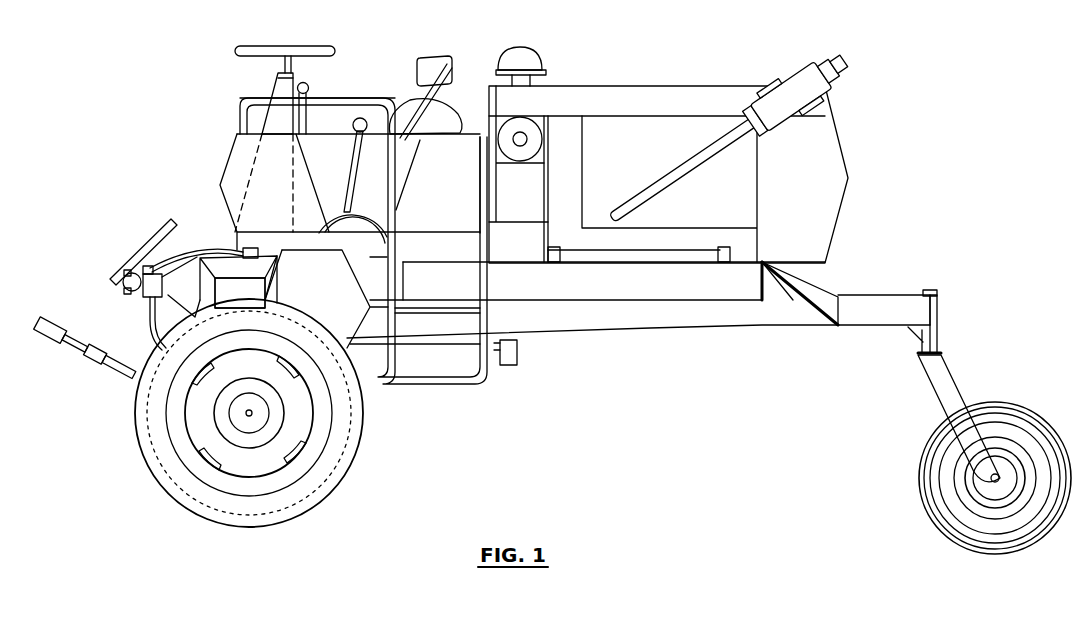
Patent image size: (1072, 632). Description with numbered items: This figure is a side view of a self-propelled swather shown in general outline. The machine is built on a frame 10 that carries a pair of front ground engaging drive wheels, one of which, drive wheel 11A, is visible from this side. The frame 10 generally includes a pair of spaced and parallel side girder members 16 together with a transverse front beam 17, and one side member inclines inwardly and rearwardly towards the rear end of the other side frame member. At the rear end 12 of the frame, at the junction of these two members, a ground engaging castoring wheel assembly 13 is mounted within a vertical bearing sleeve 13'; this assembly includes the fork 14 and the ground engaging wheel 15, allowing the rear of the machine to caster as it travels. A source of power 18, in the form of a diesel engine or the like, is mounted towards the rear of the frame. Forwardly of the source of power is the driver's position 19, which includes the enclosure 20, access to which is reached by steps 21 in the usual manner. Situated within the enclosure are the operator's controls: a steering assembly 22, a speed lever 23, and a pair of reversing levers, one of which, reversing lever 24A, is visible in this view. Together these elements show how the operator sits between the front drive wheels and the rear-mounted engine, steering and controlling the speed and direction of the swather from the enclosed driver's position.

The frame 10 is at (645, 331).
The front ground engaging drive wheel 11A is at (338, 470).
The rear end of the frame 12 is at (868, 296).
The ground engaging castoring wheel assembly 13 is at (948, 417).
The vertical bearing sleeve 13' is at (944, 321).
The fork 14 is at (937, 402).
The ground engaging wheel 15 is at (918, 487).
The side girder member 16 is at (706, 327).
The transverse front beam 17 is at (240, 293).
The source of power 18 is at (672, 153).
The driver's position 19 is at (375, 99).
The enclosure 20 is at (223, 200).
The steps 21 is at (465, 386).
The steering assembly 22 is at (278, 77).
The speed lever 23 is at (358, 177).
The reversing lever 24A is at (309, 92).